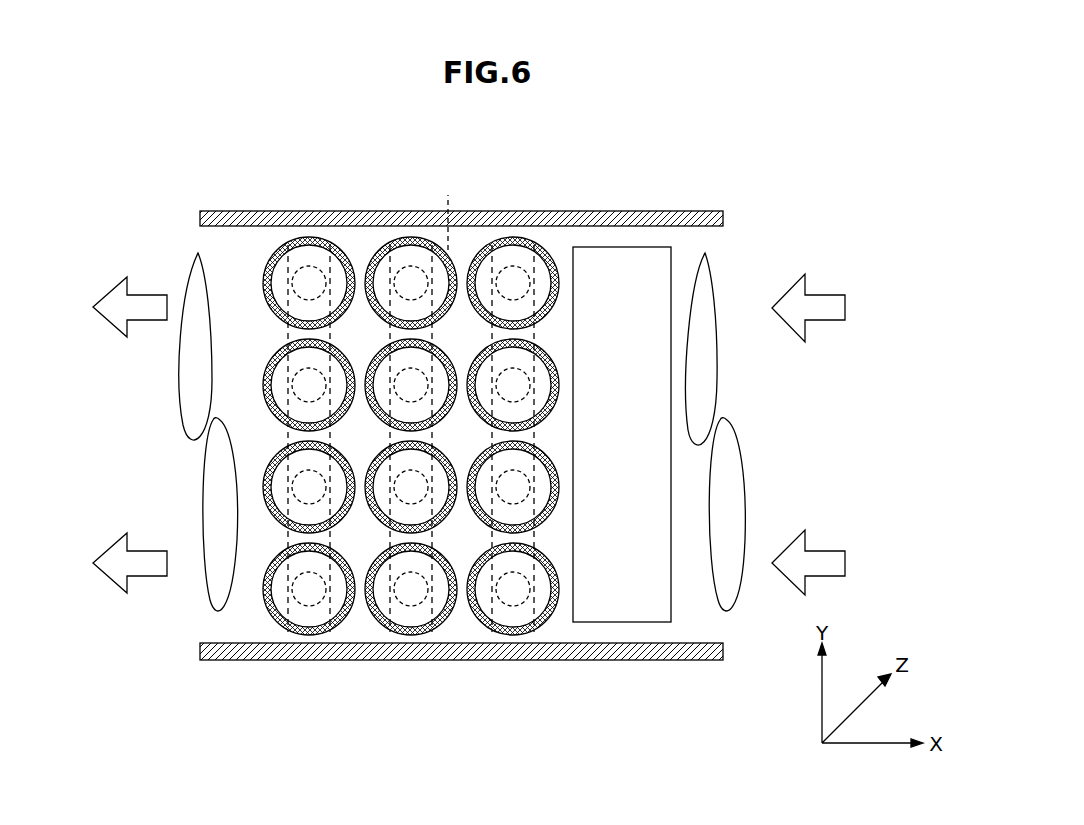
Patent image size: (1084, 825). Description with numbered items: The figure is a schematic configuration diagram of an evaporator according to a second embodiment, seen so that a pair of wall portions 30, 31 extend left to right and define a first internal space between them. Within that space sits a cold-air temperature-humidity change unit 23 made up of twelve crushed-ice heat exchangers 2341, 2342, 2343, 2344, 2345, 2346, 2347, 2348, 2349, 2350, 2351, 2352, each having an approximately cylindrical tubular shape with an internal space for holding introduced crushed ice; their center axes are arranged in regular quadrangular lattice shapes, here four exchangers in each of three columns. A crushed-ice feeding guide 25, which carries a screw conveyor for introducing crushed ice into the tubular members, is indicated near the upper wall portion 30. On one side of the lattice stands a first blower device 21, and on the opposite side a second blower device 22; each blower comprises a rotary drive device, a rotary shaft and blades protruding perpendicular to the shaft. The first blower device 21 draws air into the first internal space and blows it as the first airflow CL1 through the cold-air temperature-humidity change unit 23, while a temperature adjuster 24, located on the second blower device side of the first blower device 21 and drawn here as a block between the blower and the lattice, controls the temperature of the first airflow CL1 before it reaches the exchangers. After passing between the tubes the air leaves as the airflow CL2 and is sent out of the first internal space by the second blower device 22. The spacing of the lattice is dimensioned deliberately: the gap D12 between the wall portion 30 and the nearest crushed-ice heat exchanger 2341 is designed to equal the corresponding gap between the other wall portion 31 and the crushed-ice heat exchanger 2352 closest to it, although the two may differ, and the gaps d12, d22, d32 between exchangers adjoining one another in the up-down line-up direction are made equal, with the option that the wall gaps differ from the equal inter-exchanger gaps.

The first blower device 21 is at (733, 603).
The second blower device 22 is at (207, 600).
The cold-air temperature-humidity change unit 23 is at (371, 228).
The temperature adjuster 24 is at (657, 622).
The crushed-ice feeding guide 25 is at (448, 200).
The wall portion 30 is at (702, 210).
The wall portion 31 is at (705, 660).
The crushed-ice heat exchanger 2341 is at (317, 255).
The crushed-ice heat exchanger 2342 is at (280, 390).
The crushed-ice heat exchanger 2343 is at (282, 493).
The crushed-ice heat exchanger 2344 is at (282, 565).
The crushed-ice heat exchanger 2345 is at (417, 255).
The crushed-ice heat exchanger 2346 is at (440, 367).
The crushed-ice heat exchanger 2347 is at (380, 488).
The crushed-ice heat exchanger 2348 is at (407, 617).
The crushed-ice heat exchanger 2349 is at (540, 262).
The crushed-ice heat exchanger 2350 is at (540, 377).
The crushed-ice heat exchanger 2351 is at (560, 470).
The crushed-ice heat exchanger 2352 is at (512, 615).
The gap between crushed-ice heat exchanger and housing D12 is at (300, 238).
The gap between crushed-ice heat exchangers d12 is at (286, 332).
The gap between crushed-ice heat exchangers d22 is at (286, 435).
The gap between crushed-ice heat exchangers d32 is at (286, 537).
The airflow CL1 is at (744, 433).
The airflow CL2 is at (177, 435).